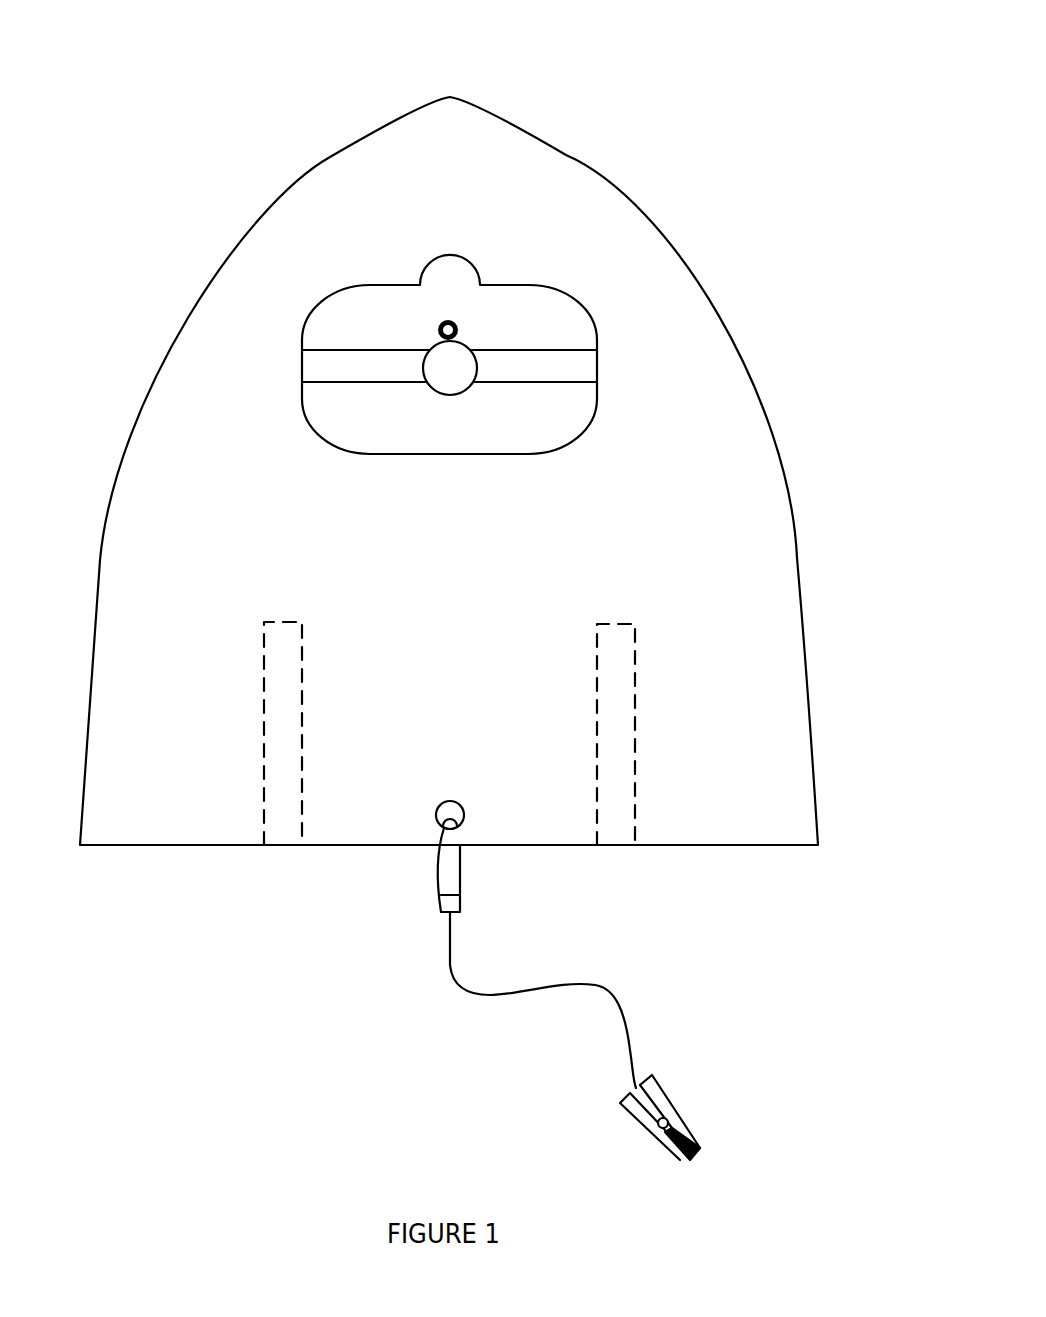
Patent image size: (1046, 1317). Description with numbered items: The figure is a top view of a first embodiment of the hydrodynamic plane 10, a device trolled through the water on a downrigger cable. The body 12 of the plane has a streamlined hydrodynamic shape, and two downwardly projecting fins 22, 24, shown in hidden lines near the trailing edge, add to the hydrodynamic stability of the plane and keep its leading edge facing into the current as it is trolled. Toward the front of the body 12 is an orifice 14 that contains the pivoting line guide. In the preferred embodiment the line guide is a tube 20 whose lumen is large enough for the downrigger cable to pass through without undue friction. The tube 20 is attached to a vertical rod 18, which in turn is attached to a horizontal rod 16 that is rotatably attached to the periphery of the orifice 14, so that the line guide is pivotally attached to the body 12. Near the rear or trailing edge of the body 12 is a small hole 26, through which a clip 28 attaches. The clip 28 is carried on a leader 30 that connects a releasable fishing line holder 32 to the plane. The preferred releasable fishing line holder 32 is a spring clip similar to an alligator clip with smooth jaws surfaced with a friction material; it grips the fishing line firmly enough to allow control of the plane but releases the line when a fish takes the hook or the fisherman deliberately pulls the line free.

The hydrodynamic plane 10 is at (558, 97).
The body 12 is at (738, 482).
The orifice 14 is at (485, 454).
The horizontal rod 16 is at (584, 368).
The vertical rod 18 is at (462, 391).
The tube 20 is at (459, 328).
The fin 22 is at (302, 737).
The fin 24 is at (635, 745).
The small hole 26 is at (458, 803).
The clip 28 is at (460, 897).
The leader 30 is at (533, 993).
The releasable fishing line holder 32 is at (683, 1125).